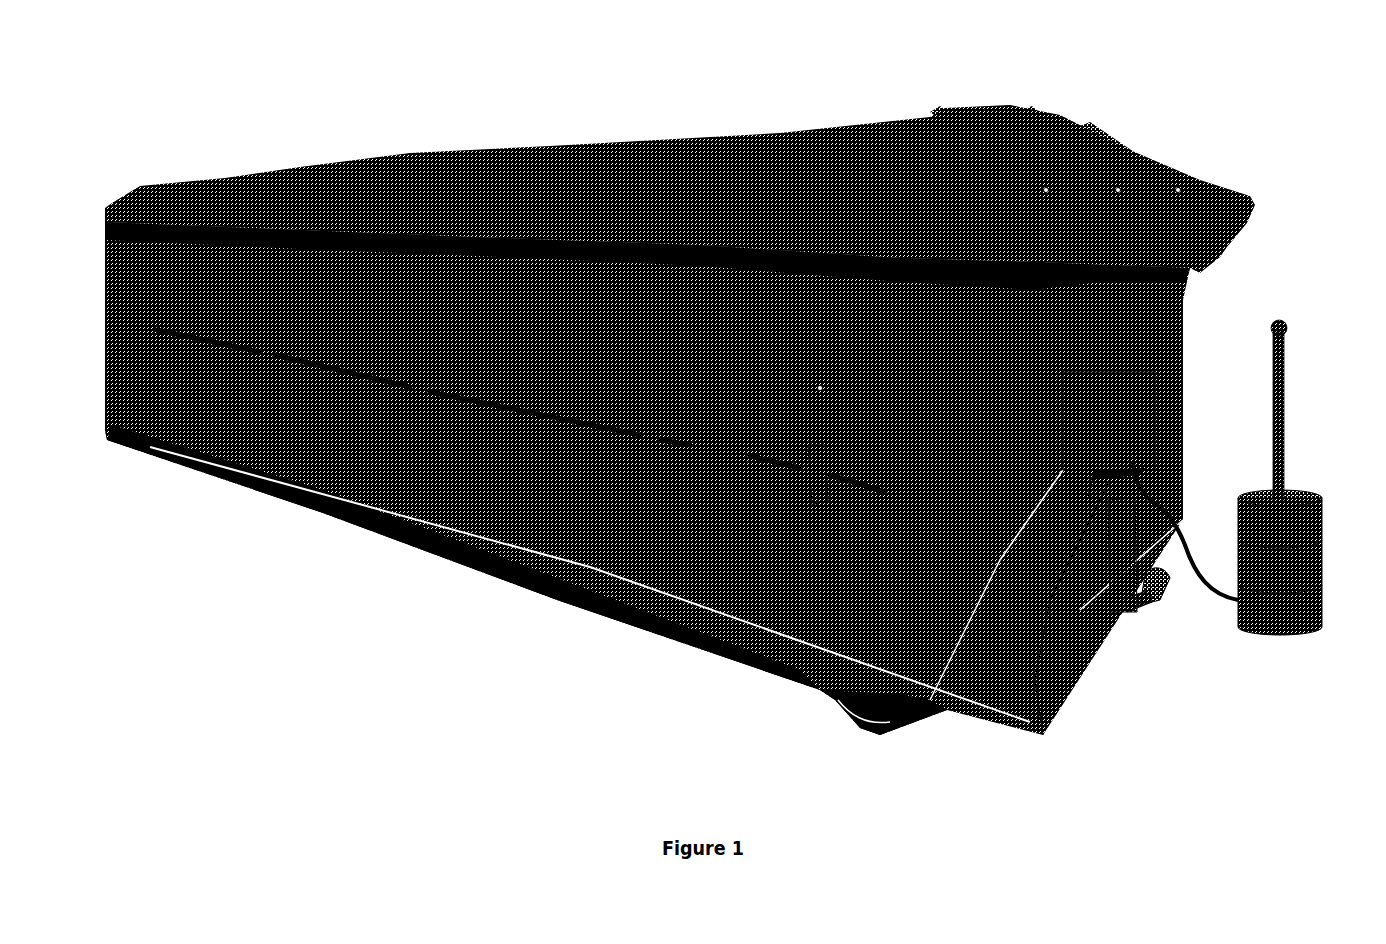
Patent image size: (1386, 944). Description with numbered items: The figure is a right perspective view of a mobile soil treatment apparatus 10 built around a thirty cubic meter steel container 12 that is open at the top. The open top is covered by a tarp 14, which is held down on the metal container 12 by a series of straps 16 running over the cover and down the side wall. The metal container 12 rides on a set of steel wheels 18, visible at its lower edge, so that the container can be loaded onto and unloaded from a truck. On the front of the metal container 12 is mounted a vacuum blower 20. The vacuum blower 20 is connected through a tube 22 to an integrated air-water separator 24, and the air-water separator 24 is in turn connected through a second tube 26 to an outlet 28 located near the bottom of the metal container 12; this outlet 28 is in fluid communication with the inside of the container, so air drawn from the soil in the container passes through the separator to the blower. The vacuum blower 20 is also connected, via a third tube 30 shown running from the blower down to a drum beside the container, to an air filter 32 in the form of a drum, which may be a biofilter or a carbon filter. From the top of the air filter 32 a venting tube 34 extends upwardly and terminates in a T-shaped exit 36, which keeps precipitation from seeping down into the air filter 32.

The mobile soil treatment apparatus 10 is at (708, 425).
The steel container 12 is at (110, 275).
The tarp 14 is at (464, 185).
The straps 16 is at (1175, 178).
The steel wheels 18 is at (912, 720).
The vacuum blower 20 is at (1152, 418).
The tube 22 is at (1043, 735).
The integrated air-water separator 24 is at (1122, 640).
The second tube 26 is at (1148, 627).
The outlet 28 is at (1165, 580).
The third tube 30 is at (1172, 505).
The air filter 32 is at (1322, 595).
The venting tube 34 is at (1284, 429).
The T-shaped exit 36 is at (1289, 324).